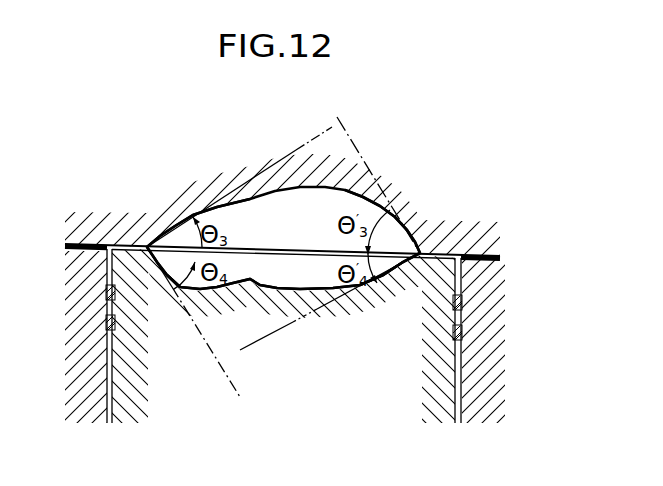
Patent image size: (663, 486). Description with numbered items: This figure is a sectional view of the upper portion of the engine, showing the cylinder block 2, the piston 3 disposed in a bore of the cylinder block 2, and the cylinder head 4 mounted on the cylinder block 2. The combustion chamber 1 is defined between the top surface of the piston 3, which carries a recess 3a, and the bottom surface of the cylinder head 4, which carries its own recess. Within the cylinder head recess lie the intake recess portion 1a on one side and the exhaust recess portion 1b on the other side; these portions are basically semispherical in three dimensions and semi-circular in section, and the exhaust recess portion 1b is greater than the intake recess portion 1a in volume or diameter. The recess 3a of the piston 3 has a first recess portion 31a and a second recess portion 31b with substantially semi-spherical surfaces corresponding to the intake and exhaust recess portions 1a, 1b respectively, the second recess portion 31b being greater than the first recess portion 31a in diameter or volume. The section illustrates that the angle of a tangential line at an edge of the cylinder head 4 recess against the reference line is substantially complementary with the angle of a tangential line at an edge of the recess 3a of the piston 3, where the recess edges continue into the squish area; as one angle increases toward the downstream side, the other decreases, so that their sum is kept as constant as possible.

The combustion chamber 1 is at (298, 222).
The intake recess portion 1a is at (237, 202).
The exhaust recess portion 1b is at (372, 195).
The cylinder block 2 is at (481, 326).
The piston 3 is at (434, 291).
The recess 3a is at (285, 284).
The first recess portion 31a is at (190, 290).
The second recess portion 31b is at (378, 272).
The cylinder head 4 is at (490, 240).